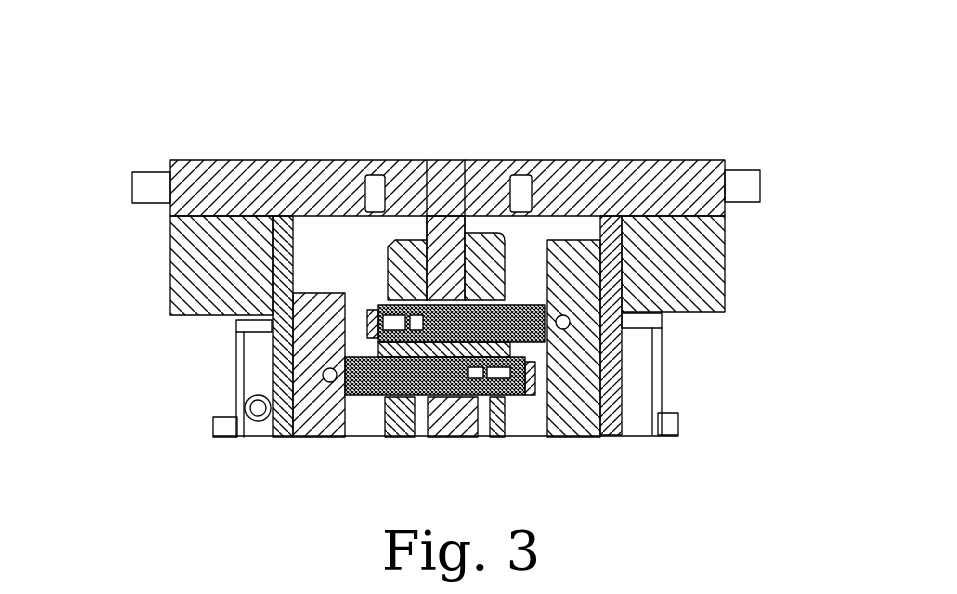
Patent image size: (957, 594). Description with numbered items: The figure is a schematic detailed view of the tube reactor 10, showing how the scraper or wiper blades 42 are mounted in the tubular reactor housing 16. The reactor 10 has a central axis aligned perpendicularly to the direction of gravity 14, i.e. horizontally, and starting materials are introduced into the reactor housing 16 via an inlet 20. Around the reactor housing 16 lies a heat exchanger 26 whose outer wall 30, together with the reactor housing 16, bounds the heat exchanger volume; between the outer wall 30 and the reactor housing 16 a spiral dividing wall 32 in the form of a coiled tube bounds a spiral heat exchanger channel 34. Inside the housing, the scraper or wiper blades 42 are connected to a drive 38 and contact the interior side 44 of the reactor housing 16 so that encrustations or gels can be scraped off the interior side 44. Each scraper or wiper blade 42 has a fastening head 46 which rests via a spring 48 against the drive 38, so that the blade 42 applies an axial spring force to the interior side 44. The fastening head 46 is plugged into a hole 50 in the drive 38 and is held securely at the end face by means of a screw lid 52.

The reactor 10 is at (692, 138).
The direction of gravity 14 is at (277, 76).
The reactor housing 16 is at (304, 270).
The inlet 20 is at (153, 172).
The heat exchanger 26 is at (427, 375).
The outer wall 30 is at (237, 365).
The dividing wall 32 is at (245, 406).
The heat exchanger channel 34 is at (237, 335).
The drive 38 is at (450, 437).
The scraper or wiper blade 42 is at (313, 437).
The interior side 44 is at (270, 232).
The fastening head 46 is at (442, 300).
The spring 48 is at (510, 302).
The hole 50 is at (392, 303).
The screw lid 52 is at (372, 312).